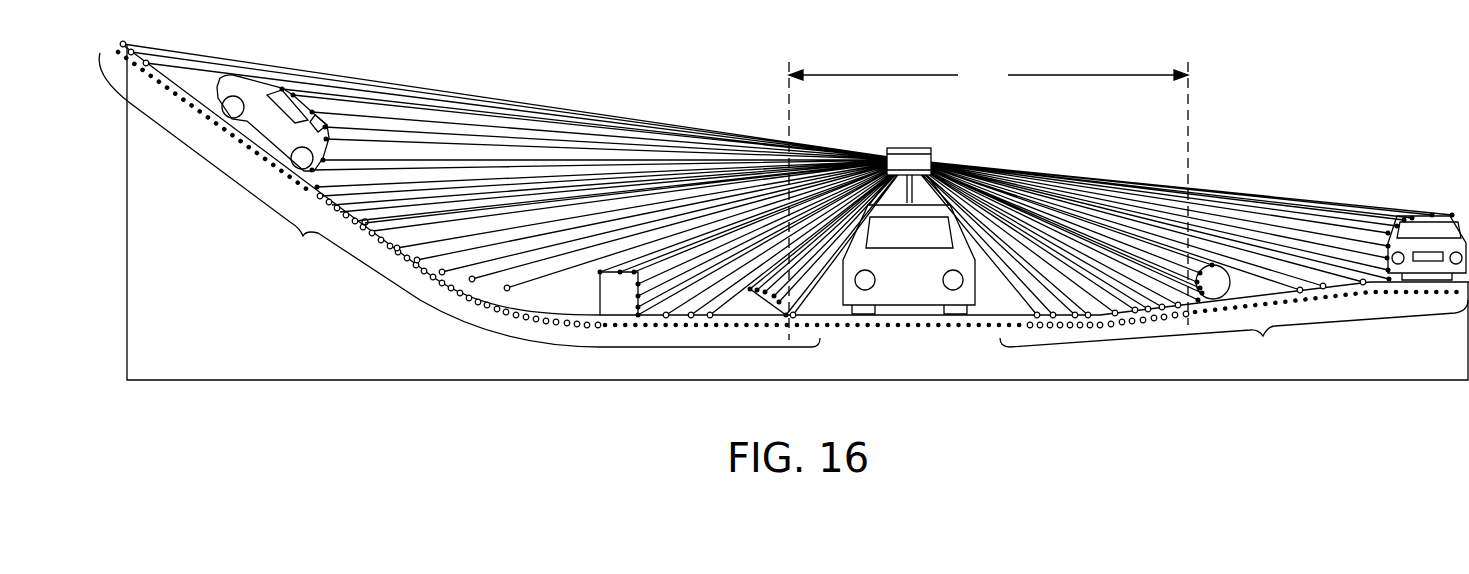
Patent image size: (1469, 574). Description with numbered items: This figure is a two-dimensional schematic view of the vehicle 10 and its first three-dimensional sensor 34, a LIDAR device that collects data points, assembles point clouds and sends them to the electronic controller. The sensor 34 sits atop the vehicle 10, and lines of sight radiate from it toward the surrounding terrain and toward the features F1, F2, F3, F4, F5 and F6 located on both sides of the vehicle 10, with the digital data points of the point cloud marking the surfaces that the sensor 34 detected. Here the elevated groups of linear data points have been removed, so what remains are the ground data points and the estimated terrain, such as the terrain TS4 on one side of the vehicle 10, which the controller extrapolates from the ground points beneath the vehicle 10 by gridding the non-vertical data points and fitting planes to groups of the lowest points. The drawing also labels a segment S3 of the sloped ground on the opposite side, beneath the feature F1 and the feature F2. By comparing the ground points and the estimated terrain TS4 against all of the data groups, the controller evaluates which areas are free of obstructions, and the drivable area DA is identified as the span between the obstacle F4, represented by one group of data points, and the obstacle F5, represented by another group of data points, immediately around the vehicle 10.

The vehicle 10 is at (911, 283).
The first 3D sensor 34 is at (903, 160).
The feature F1 is at (260, 116).
The feature F2 is at (363, 214).
The feature F3 is at (613, 290).
The feature F4 is at (752, 287).
The feature F5 is at (1213, 280).
The feature F6 is at (1420, 244).
The road segment S3 is at (459, 200).
The terrain TS4 is at (1234, 334).
The drivable area DA is at (988, 200).